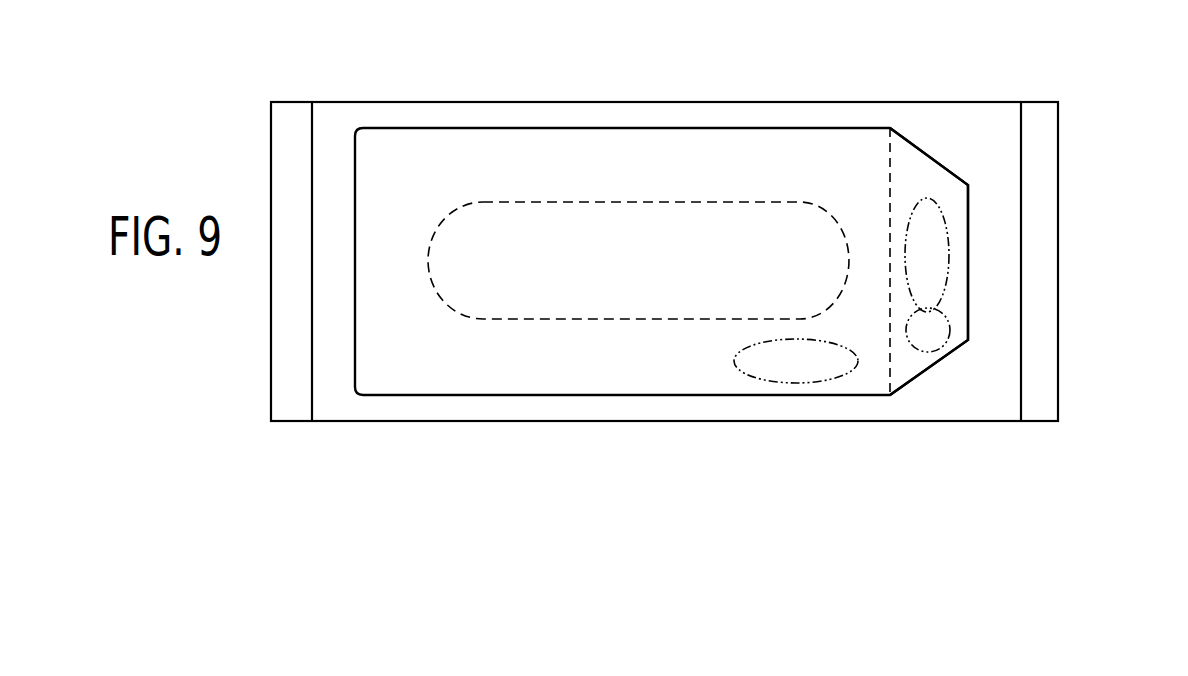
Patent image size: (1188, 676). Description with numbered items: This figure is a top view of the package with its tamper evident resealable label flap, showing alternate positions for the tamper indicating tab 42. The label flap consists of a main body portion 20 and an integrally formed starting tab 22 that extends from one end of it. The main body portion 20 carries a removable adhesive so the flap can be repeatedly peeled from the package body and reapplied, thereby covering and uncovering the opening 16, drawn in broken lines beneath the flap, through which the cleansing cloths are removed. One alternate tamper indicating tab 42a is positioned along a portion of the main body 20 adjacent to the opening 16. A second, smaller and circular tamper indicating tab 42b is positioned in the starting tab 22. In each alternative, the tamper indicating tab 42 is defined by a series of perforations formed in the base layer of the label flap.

The opening 16 is at (560, 202).
The main body portion 20 is at (725, 155).
The starting tab 22 is at (922, 173).
The tamper indicating tab 42 is at (930, 248).
The tamper indicating tab 42a is at (797, 376).
The circular tamper indicating tab 42b is at (950, 330).